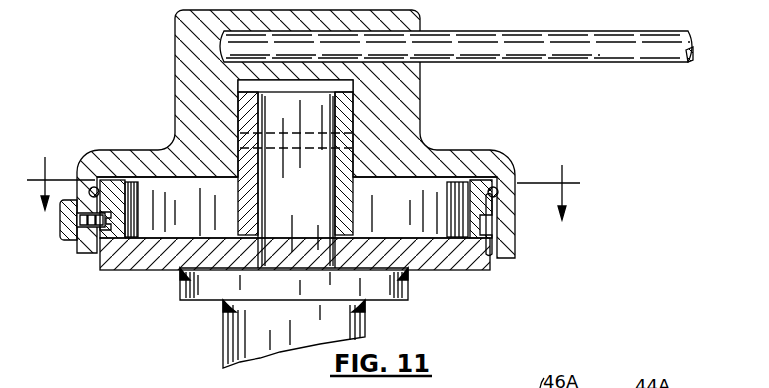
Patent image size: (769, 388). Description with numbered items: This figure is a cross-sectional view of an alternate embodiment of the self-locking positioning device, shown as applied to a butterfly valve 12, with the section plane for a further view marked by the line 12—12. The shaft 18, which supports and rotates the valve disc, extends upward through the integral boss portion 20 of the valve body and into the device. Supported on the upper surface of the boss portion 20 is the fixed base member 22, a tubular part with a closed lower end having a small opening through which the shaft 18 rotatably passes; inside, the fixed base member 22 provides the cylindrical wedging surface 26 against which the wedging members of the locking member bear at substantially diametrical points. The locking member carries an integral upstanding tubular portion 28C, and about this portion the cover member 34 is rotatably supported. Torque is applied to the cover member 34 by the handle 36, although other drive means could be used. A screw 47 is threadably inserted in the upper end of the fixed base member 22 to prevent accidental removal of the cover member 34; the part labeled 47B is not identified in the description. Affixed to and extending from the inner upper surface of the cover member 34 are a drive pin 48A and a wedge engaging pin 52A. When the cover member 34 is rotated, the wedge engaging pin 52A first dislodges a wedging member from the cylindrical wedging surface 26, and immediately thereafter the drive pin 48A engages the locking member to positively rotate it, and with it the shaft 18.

The valve 12 is at (308, 196).
The shaft 18 is at (302, 219).
The boss portion 20 is at (240, 332).
The fixed base member 22 is at (472, 262).
The cylindrical wedging surface 26 is at (128, 222).
The upstanding tubular portion 28C is at (250, 113).
The cover member 34 is at (184, 97).
The handle 36 is at (622, 62).
The screw 47 is at (70, 242).
The retaining pin 47B is at (103, 236).
The drive pin 48A is at (224, 213).
The wedge engaging pin 52A is at (358, 206).